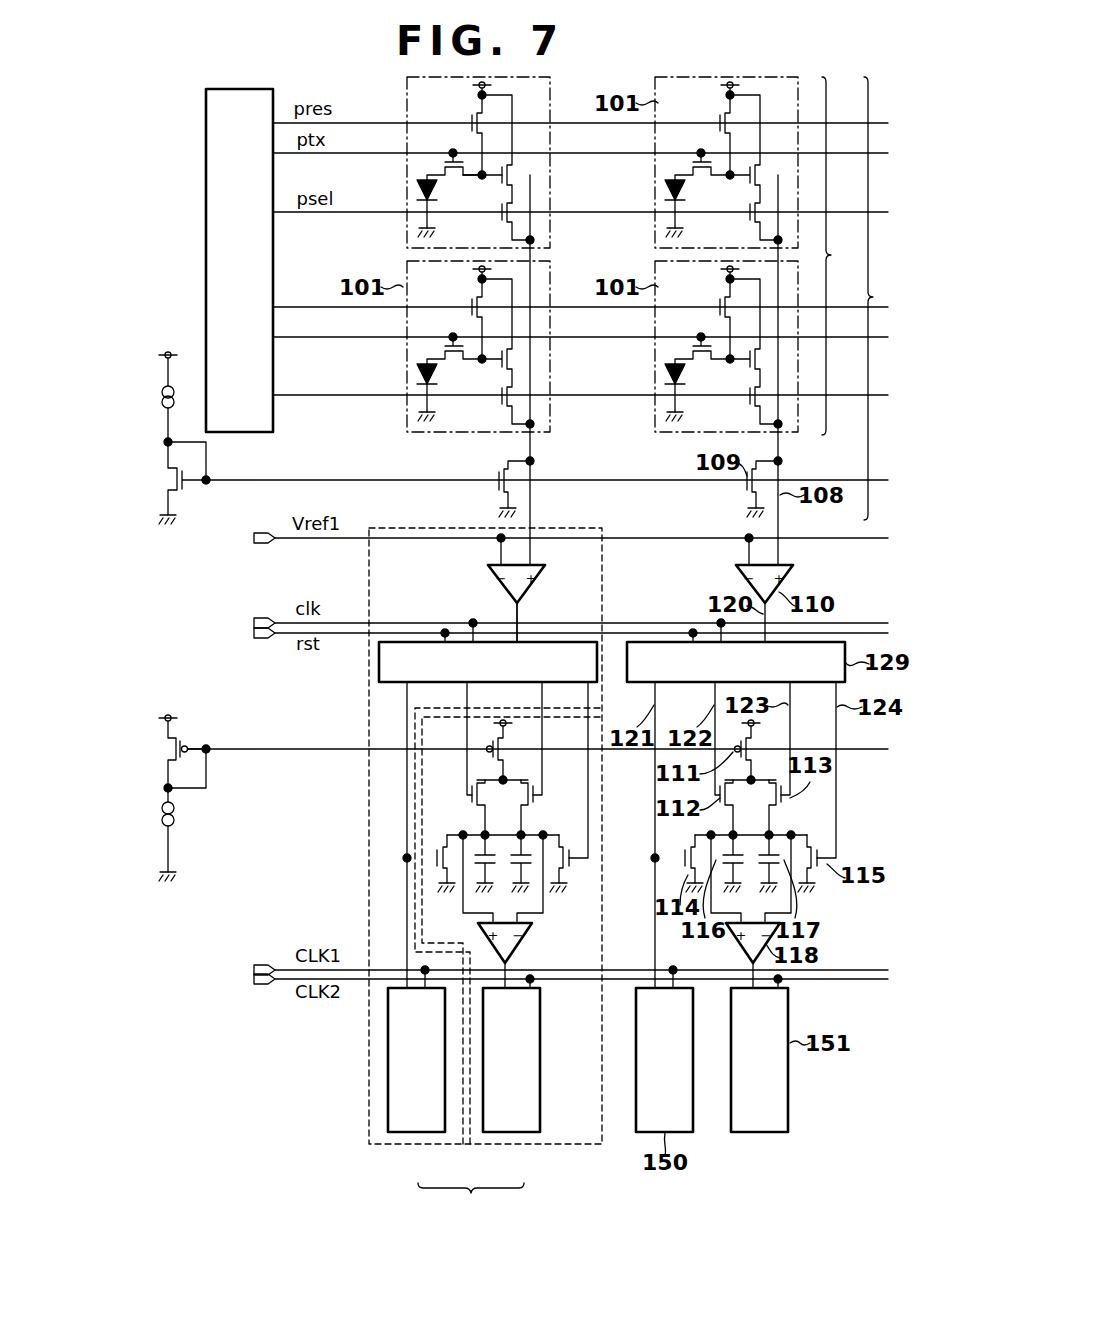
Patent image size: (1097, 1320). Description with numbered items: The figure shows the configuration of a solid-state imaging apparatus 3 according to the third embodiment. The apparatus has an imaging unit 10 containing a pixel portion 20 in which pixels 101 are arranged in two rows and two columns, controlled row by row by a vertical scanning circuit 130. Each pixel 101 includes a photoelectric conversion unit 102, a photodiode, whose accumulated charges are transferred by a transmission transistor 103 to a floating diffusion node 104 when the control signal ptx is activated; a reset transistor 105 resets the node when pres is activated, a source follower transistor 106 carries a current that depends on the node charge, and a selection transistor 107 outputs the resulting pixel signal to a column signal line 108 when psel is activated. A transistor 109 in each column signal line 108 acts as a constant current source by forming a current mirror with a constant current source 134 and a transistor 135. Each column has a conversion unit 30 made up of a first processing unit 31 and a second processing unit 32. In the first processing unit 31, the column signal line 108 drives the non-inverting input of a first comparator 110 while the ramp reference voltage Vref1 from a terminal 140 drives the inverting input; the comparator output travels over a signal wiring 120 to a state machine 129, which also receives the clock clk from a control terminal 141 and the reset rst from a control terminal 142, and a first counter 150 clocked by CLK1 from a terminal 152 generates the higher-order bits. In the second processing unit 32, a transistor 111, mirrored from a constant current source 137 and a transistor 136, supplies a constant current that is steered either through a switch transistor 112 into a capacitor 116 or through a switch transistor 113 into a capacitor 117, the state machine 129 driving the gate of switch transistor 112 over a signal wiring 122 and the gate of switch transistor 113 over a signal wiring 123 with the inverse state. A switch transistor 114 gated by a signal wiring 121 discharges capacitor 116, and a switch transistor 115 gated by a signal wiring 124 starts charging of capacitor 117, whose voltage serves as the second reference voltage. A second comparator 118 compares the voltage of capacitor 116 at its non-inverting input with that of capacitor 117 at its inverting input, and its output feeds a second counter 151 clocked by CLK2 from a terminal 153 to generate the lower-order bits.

The solid-state imaging apparatus 3 is at (197, 1098).
The imaging unit 10 is at (883, 298).
The pixel portion 20 is at (841, 256).
The conversion unit 30 is at (485, 872).
The first processing unit 31 is at (445, 1148).
The second processing unit 32 is at (510, 1148).
The pixel 101 is at (403, 103).
The photoelectric conversion unit 102 is at (418, 200).
The transmission transistor 103 is at (442, 162).
The floating diffusion node 104 is at (481, 179).
The reset transistor 105 is at (470, 120).
The source follower transistor 106 is at (515, 166).
The selection transistor 107 is at (490, 219).
The column signal line 108 is at (532, 495).
The transistor 109 is at (499, 476).
The first comparator 110 is at (532, 592).
The transistor 111 is at (503, 746).
The switch transistor 112 is at (468, 798).
The switch transistor 113 is at (535, 798).
The switch transistor 114 is at (434, 850).
The switch transistor 115 is at (575, 850).
The capacitor 116 is at (468, 860).
The capacitor 117 is at (536, 860).
The second comparator 118 is at (518, 944).
The signal wiring 120 is at (513, 614).
The signal wiring 121 is at (407, 710).
The signal wiring 122 is at (467, 717).
The signal wiring 123 is at (542, 695).
The signal wiring 124 is at (588, 695).
The state machine 129 is at (377, 662).
The vertical scanning circuit 130 is at (205, 190).
The constant current source 134 is at (166, 390).
The transistor 135 is at (168, 479).
The transistor 136 is at (166, 750).
The constant current source 137 is at (176, 808).
The terminal 140 is at (254, 538).
The control terminal 141 is at (254, 623).
The control terminal 142 is at (254, 633).
The first counter 150 is at (388, 1037).
The second counter 151 is at (540, 1043).
The terminal 152 is at (254, 970).
The terminal 153 is at (254, 979).